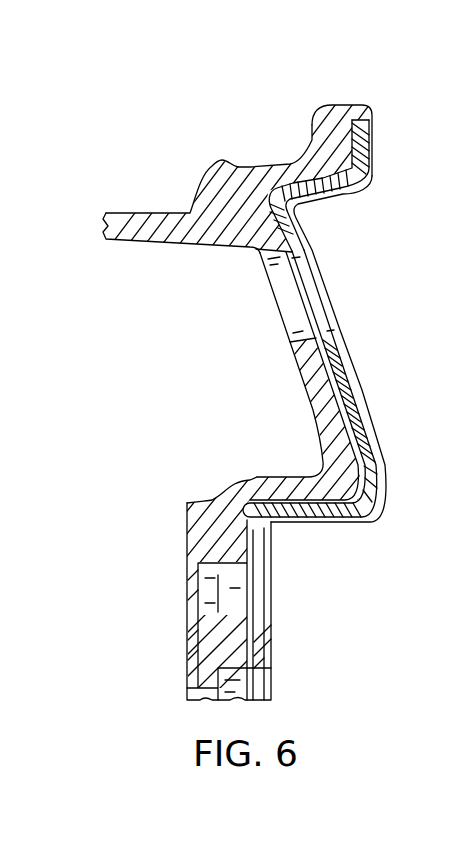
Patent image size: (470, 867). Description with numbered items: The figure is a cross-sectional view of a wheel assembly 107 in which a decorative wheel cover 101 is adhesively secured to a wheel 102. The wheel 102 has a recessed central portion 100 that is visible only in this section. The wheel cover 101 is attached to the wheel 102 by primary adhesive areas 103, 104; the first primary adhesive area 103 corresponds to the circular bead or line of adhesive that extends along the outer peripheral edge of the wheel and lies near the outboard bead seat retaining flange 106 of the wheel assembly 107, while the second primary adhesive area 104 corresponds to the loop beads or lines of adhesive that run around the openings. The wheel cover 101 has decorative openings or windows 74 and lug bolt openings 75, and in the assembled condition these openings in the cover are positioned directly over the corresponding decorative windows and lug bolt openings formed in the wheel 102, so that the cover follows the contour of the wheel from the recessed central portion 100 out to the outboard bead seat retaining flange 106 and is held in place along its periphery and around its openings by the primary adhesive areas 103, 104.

The recessed central portion 100 is at (350, 553).
The wheel cover 101 is at (356, 380).
The wheel 102 is at (300, 364).
The primary adhesive area 103 is at (373, 137).
The primary adhesive area 104 is at (366, 455).
The outboard bead seat retaining flange 106 is at (347, 95).
The wheel assembly 107 is at (274, 132).
The decorative openings or windows 74 is at (325, 303).
The lug bolt openings 75 is at (203, 592).